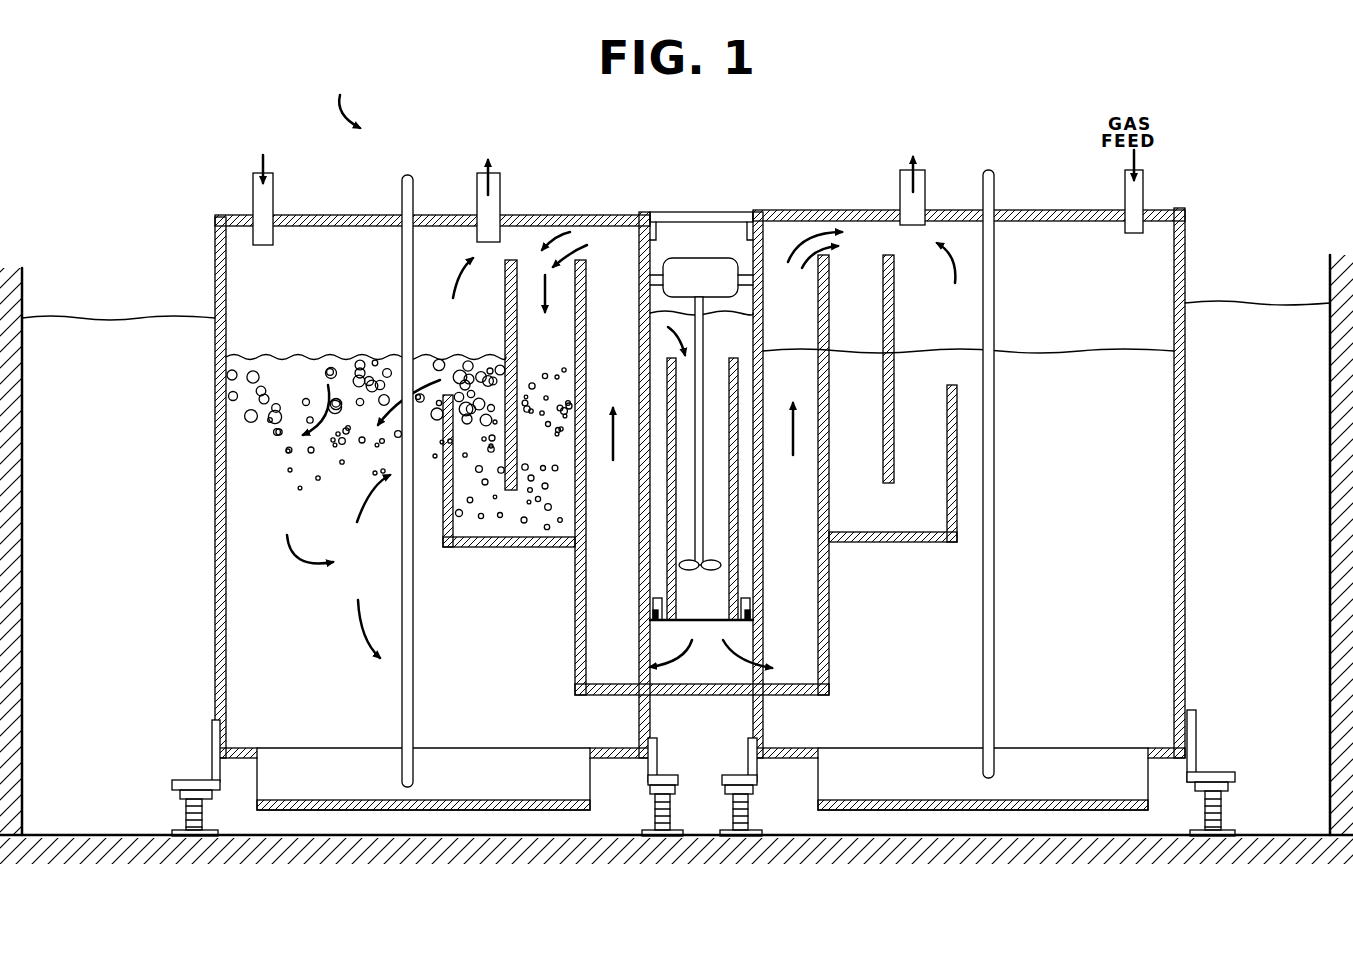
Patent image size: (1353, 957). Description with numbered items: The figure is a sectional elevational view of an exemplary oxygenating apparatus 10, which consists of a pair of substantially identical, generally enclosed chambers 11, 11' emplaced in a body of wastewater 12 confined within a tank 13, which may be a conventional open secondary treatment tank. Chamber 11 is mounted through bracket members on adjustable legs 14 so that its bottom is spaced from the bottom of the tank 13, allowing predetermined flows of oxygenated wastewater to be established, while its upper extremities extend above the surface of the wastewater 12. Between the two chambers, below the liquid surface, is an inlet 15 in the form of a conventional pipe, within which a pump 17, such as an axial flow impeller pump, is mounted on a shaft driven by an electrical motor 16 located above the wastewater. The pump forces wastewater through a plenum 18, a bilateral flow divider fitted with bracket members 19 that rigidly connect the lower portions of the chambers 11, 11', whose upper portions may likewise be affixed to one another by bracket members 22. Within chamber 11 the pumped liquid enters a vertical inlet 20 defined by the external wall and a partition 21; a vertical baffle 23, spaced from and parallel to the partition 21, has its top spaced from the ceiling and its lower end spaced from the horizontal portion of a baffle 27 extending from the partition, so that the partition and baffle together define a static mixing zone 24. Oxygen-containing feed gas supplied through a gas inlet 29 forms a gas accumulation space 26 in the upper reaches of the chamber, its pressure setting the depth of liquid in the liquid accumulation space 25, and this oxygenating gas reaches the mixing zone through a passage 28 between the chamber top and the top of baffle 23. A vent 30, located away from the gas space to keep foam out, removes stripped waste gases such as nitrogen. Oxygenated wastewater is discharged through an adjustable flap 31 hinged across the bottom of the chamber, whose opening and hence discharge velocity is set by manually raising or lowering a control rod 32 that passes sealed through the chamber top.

The oxygenating apparatus 10 is at (357, 101).
The chamber 11 is at (404, 483).
The chamber 11' is at (1008, 499).
The wastewater 12 is at (676, 363).
The tank 13 is at (22, 565).
The adjustable legs 14 is at (186, 812).
The inlet 15 is at (733, 365).
The electrical motor 16 is at (720, 255).
The pump 17 is at (700, 572).
The plenum 18 is at (702, 475).
The bracket members 19 is at (752, 616).
The inlet 20 is at (695, 382).
The partition 21 is at (586, 268).
The bracket members 22 is at (700, 212).
The vertical baffle 23 is at (505, 340).
The static mixing zone 24 is at (527, 512).
The liquid accumulation space 25 is at (338, 582).
The gas accumulation space 26 is at (388, 288).
The baffle 27 is at (460, 548).
The passage 28 is at (503, 240).
The inlet 29 is at (273, 190).
The vent 30 is at (477, 198).
The adjustable flap 31 is at (510, 770).
The control rod 32 is at (402, 187).